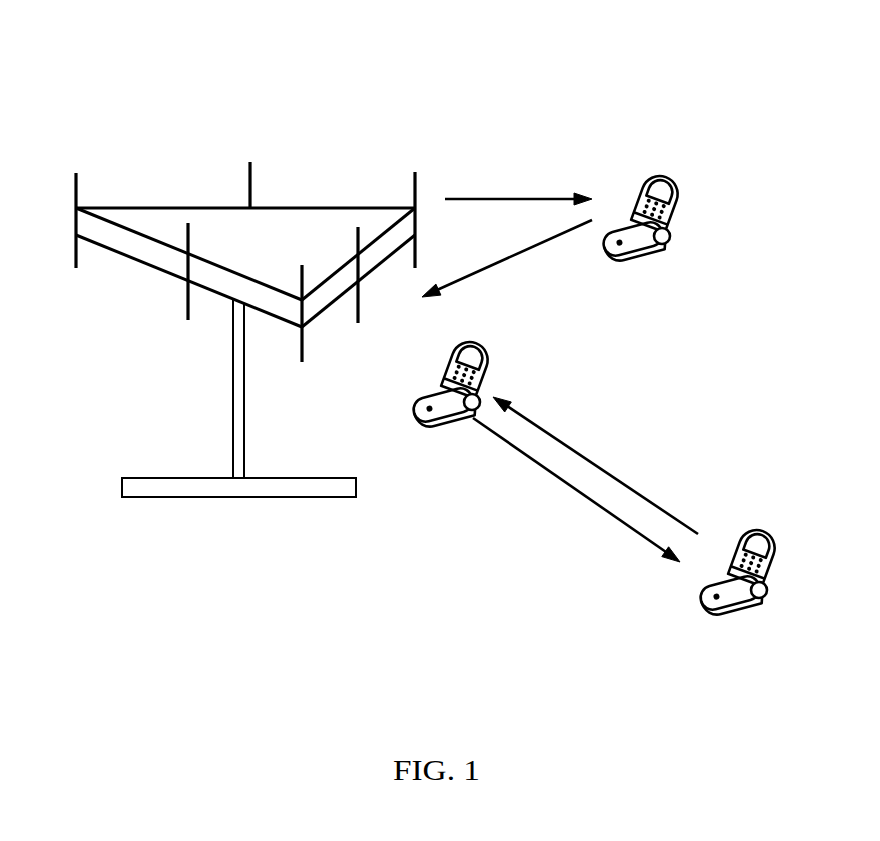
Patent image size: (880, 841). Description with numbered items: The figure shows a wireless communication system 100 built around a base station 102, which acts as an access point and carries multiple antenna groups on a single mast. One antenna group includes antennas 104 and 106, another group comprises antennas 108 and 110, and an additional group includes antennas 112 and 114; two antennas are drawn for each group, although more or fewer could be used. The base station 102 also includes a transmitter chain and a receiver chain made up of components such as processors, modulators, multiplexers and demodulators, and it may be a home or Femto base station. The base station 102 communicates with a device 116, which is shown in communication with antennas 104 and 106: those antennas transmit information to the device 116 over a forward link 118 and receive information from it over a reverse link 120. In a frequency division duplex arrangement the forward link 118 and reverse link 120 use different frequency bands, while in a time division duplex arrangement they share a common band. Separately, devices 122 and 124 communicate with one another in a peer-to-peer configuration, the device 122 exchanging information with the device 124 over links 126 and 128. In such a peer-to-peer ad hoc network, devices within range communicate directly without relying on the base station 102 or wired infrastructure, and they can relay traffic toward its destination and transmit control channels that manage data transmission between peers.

The wireless communication system 100 is at (757, 74).
The base station 102 is at (283, 497).
The antenna 104 is at (415, 172).
The antenna 106 is at (358, 323).
The antenna 108 is at (302, 362).
The antenna 110 is at (188, 320).
The antenna 112 is at (76, 173).
The antenna 114 is at (250, 162).
The device 116 is at (657, 177).
The forward link 118 is at (500, 195).
The reverse link 120 is at (498, 263).
The device 122 is at (480, 345).
The device 124 is at (758, 533).
The link 126 is at (580, 497).
The link 128 is at (587, 457).